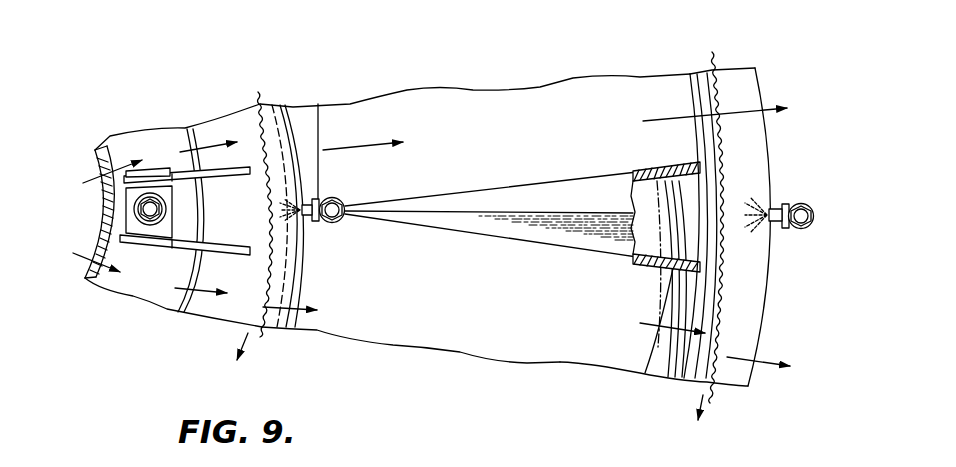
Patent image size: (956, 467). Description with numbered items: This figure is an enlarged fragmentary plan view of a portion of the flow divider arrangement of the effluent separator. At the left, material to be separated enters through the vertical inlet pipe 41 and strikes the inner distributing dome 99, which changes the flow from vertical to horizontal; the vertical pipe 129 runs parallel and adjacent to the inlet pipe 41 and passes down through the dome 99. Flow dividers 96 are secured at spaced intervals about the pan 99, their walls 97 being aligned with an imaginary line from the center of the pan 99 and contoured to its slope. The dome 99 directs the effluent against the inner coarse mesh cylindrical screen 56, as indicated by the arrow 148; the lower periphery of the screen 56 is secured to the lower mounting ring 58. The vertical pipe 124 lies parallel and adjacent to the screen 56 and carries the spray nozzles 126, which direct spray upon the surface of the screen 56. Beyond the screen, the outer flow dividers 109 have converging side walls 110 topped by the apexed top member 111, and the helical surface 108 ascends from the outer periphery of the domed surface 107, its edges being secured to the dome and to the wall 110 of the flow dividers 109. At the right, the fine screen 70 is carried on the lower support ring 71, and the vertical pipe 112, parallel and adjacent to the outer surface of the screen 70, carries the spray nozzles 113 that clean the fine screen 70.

The inlet pipe 41 is at (100, 272).
The inner distributing dome 99 is at (147, 295).
The vertical pipe 129 is at (134, 213).
The walls of the flow dividers 97 is at (247, 177).
The flow divider 96 is at (188, 252).
The cylindrical screen 56 is at (265, 290).
The lower mounting ring 58 is at (272, 326).
The arrow 148 is at (373, 142).
The vertical pipes 124 is at (338, 199).
The spray nozzles 126 is at (310, 222).
The apexed top member 111 is at (525, 192).
The flow dividers 109 is at (519, 244).
The domed surface 107 is at (465, 330).
The helical surface 108 is at (513, 102).
The side walls 110 is at (665, 168).
The fine screen 70 is at (716, 84).
The lower support ring 71 is at (750, 385).
The spray nozzles 113 is at (779, 205).
The vertical pipe 112 is at (804, 232).